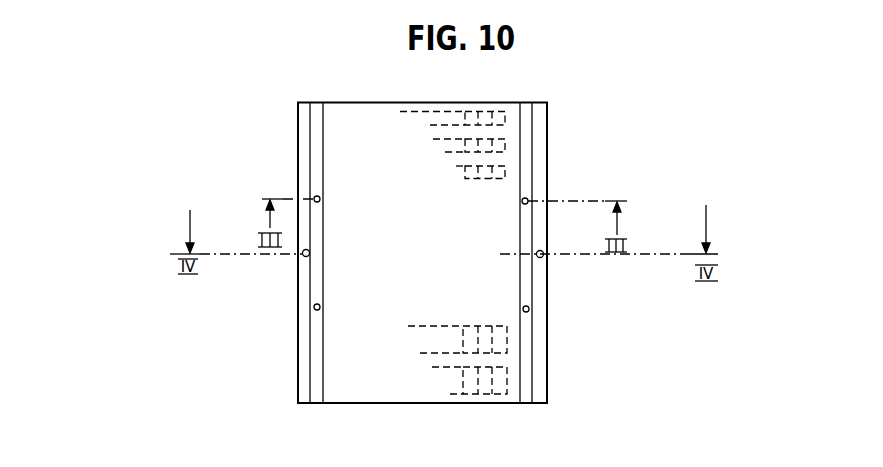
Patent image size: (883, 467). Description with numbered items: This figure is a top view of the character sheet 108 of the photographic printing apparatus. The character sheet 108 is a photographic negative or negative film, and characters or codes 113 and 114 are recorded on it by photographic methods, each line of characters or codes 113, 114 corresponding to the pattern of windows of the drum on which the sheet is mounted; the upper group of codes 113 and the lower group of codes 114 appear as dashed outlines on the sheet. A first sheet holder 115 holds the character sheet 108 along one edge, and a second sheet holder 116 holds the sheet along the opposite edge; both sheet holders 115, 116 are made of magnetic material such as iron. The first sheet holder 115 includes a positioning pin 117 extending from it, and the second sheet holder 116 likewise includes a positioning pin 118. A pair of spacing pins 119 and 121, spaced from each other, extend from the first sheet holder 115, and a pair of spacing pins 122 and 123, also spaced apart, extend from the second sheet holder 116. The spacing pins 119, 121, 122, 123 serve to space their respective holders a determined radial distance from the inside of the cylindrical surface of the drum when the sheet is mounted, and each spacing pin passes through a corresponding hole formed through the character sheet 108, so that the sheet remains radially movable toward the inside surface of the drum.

The character sheet 108 is at (423, 87).
The characters or codes 113 is at (488, 112).
The characters or codes 114 is at (502, 392).
The first sheet holder 115 is at (305, 333).
The second sheet holder 116 is at (542, 130).
The positioning pin 117 is at (305, 257).
The positioning pin 118 is at (541, 258).
The spacing pin 119 is at (314, 198).
The spacing pin 121 is at (314, 307).
The spacing pin 122 is at (528, 199).
The spacing pin 123 is at (529, 309).